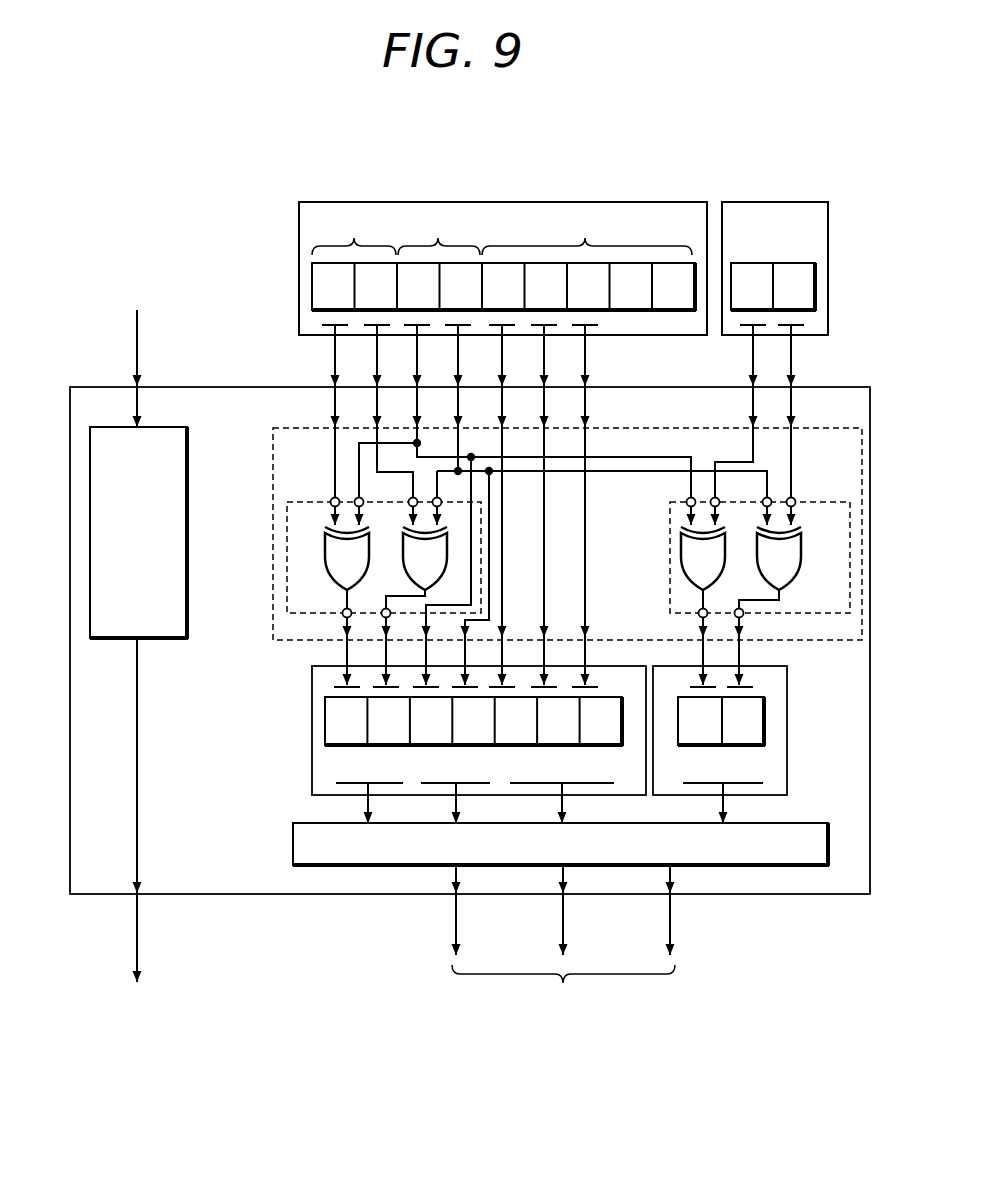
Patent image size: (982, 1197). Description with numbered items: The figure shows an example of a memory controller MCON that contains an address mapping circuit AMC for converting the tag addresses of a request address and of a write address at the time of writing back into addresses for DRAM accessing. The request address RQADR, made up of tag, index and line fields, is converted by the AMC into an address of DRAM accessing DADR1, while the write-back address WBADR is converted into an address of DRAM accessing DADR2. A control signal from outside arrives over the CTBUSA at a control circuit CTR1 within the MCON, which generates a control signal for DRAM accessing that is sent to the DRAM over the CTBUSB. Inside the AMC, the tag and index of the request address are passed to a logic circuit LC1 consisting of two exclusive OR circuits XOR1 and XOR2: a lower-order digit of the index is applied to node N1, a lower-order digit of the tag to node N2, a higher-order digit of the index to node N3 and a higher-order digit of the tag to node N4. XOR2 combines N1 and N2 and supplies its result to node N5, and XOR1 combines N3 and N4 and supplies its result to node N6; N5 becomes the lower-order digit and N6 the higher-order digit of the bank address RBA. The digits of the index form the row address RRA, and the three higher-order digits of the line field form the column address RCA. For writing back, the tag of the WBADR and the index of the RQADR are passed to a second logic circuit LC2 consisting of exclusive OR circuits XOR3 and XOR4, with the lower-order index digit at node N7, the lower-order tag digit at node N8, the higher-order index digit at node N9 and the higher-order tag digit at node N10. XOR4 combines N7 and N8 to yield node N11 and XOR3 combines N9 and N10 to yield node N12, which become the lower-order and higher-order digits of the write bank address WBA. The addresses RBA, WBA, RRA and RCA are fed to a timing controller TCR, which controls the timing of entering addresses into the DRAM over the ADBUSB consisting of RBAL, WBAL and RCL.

The request address RQADR is at (563, 201).
The write address at the time of writing back WBADR is at (775, 253).
The memory controller MCON is at (857, 366).
The control bus CTBUSA is at (140, 355).
The control bus CTBUSB is at (142, 829).
The control circuit CTR1 is at (139, 533).
The address mapping circuit AMC is at (828, 641).
The logic circuit LC1 is at (287, 542).
The logic circuit LC2 is at (670, 525).
The exclusive OR circuit XOR1 is at (330, 562).
The exclusive OR circuit XOR2 is at (405, 568).
The exclusive OR circuit XOR3 is at (685, 560).
The exclusive OR circuit XOR4 is at (800, 550).
The node N1 is at (443, 503).
The node N2 is at (409, 506).
The node N3 is at (375, 490).
The node N4 is at (331, 506).
The node N5 is at (380, 611).
The node N6 is at (340, 611).
The node N7 is at (796, 500).
The node N8 is at (763, 499).
The node N9 is at (733, 493).
The node N10 is at (686, 503).
The node N11 is at (744, 611).
The node N12 is at (697, 611).
The address of DRAM accessing DADR1 is at (442, 744).
The address of DRAM accessing DADR2 is at (762, 744).
The bank address RBA is at (369, 770).
The row address RRA is at (455, 770).
The column address RCA is at (562, 770).
The write bank address WBA is at (723, 770).
The timing controller TCR is at (561, 844).
The read bank address line RBAL is at (429, 910).
The write bank address line WBAL is at (533, 910).
The row/column address line RCL is at (647, 910).
The address bus ADBUSB is at (563, 993).